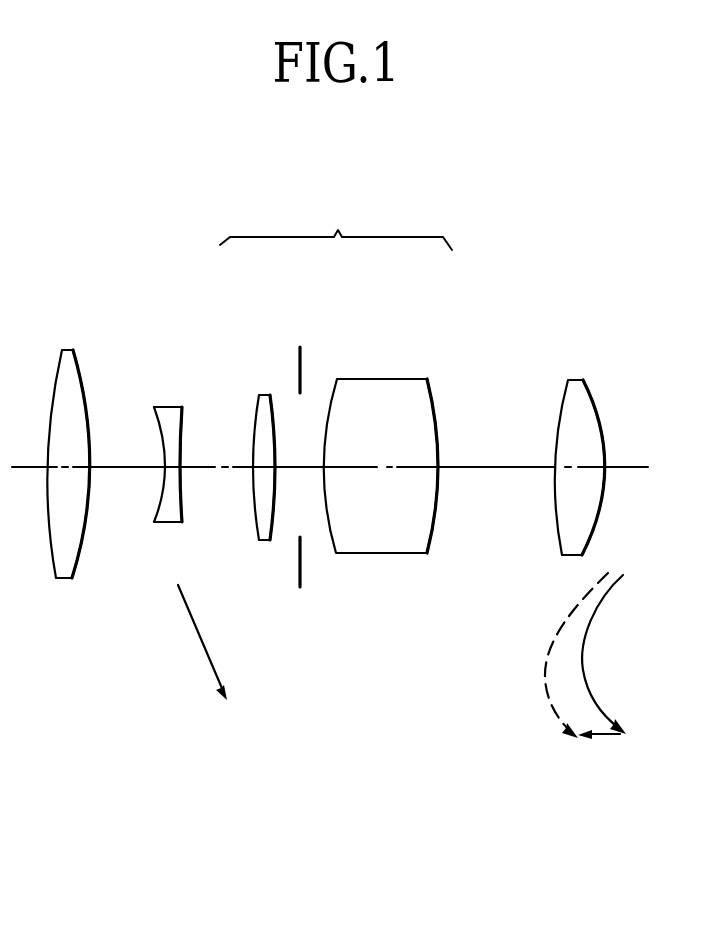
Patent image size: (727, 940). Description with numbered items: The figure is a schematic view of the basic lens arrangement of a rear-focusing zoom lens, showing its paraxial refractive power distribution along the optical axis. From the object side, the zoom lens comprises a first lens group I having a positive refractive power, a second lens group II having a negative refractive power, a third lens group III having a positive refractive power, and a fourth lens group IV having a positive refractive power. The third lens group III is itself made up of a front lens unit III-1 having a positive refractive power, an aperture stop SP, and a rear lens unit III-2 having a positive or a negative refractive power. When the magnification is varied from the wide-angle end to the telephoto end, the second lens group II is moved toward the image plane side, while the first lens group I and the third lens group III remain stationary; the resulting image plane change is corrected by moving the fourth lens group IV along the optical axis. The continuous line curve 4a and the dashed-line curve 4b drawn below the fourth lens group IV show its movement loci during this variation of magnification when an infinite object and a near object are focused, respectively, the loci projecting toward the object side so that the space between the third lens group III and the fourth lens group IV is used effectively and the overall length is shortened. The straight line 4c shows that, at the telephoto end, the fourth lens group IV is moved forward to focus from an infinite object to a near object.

The first lens group I is at (65, 350).
The second lens group II is at (165, 407).
The third lens group III is at (352, 220).
The front lens unit III-1 is at (268, 393).
The rear lens unit III-2 is at (378, 378).
The aperture stop SP is at (303, 363).
The fourth lens group IV is at (572, 380).
The continuous line curve 4a is at (585, 672).
The dashed-line curve 4b is at (543, 680).
The straight line 4c is at (603, 736).